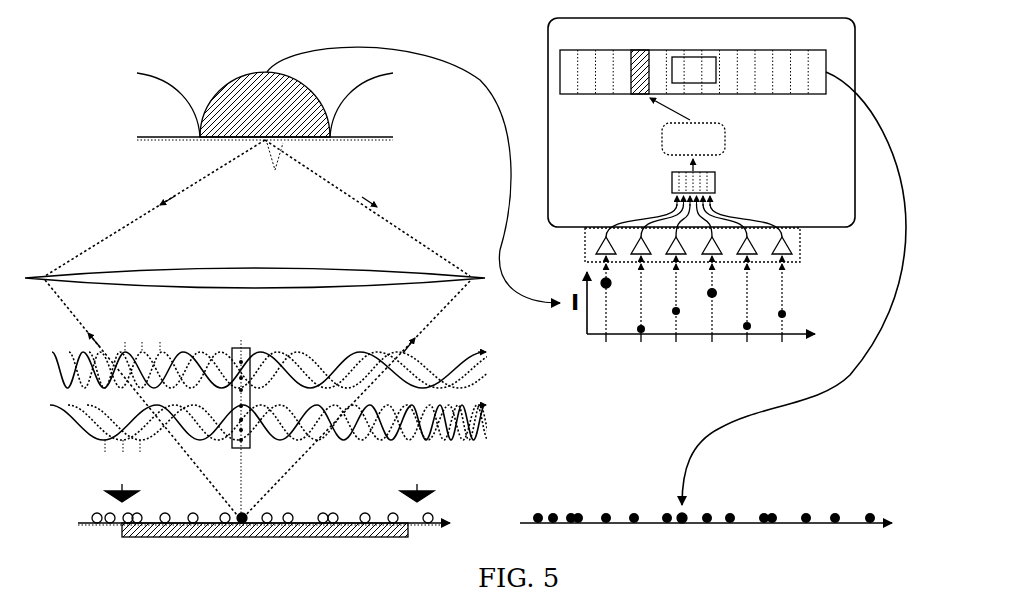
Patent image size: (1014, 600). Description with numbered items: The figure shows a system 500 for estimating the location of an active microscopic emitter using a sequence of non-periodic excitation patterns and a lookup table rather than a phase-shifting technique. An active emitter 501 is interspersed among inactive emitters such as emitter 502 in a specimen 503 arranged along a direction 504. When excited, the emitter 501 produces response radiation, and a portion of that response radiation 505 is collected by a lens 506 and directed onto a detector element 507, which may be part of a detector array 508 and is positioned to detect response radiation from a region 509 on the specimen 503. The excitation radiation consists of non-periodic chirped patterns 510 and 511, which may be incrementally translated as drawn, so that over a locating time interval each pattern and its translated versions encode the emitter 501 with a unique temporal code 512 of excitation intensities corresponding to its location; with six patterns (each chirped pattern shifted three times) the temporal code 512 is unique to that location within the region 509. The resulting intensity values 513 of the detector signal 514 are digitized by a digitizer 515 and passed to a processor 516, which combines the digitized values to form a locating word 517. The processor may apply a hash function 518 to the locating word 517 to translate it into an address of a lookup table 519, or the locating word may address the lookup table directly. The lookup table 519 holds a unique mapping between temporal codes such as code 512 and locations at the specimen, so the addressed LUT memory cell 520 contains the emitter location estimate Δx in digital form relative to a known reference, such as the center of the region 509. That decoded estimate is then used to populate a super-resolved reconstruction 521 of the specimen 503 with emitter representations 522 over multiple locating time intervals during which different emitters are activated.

The system 500 is at (96, 163).
The active emitter 501 is at (243, 516).
The inactive emitter 502 is at (430, 515).
The specimen 503 is at (86, 521).
The direction 504 is at (448, 532).
The response radiation 505 is at (452, 302).
The lens 506 is at (28, 275).
The detector element 507 is at (257, 115).
The detector array 508 is at (220, 70).
The region 509 is at (258, 537).
The chirped pattern 510 is at (80, 420).
The chirped pattern 511 is at (60, 343).
The temporal code 512 is at (240, 348).
The intensity values 513 is at (606, 289).
The detector signal 514 is at (735, 309).
The digitizer 515 is at (585, 247).
The processor 516 is at (548, 45).
The locating word 517 is at (672, 183).
The hash function 518 is at (662, 140).
The lookup table 519 is at (745, 94).
The LUT memory cell 520 is at (638, 50).
The super-resolved reconstruction 521 is at (529, 522).
The emitter representation 522 is at (684, 516).